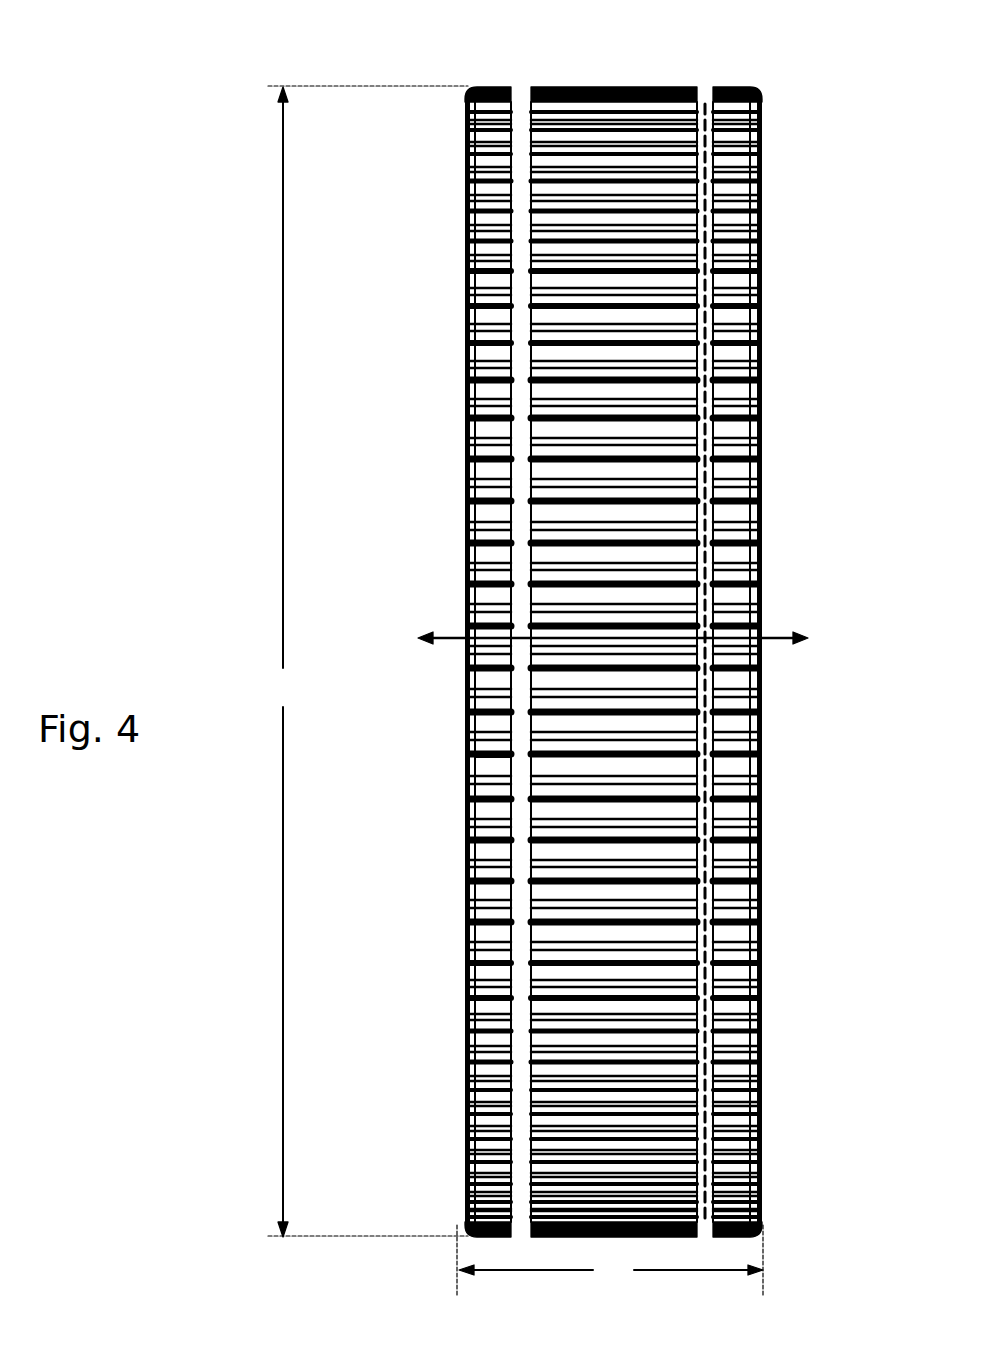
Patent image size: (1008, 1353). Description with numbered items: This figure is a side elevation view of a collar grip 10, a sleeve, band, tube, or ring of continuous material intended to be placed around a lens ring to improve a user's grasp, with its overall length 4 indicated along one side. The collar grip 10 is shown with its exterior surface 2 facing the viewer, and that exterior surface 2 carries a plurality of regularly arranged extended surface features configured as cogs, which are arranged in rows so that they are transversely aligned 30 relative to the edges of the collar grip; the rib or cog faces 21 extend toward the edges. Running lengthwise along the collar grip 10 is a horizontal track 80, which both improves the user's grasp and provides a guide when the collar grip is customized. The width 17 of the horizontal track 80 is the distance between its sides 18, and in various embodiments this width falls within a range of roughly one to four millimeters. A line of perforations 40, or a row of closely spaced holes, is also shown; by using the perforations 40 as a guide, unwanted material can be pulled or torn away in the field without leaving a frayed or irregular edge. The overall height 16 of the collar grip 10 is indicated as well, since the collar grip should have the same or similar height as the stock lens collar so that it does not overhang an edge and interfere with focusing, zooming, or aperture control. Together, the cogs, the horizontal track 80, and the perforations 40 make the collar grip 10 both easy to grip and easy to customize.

The collar grip 10 is at (178, 130).
The width 17 is at (535, 87).
The sides 18 is at (710, 89).
The horizontal track 80 is at (705, 213).
The perforations 40 is at (705, 368).
The faces 21 is at (757, 592).
The transverse alignment 30 is at (634, 641).
The exterior surface 2 is at (520, 772).
The length 4 is at (368, 661).
The height 16 is at (610, 1261).